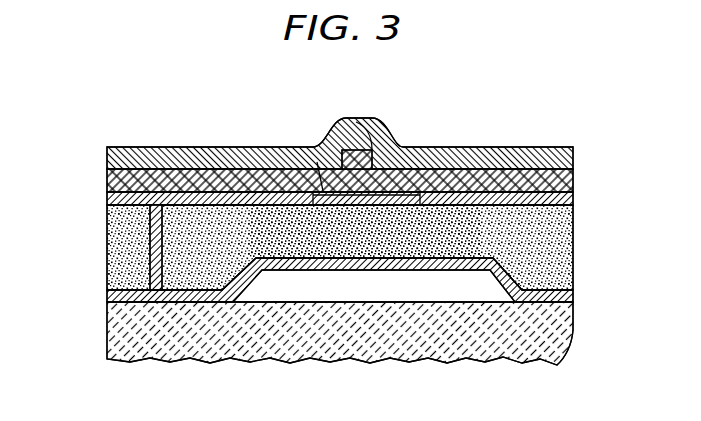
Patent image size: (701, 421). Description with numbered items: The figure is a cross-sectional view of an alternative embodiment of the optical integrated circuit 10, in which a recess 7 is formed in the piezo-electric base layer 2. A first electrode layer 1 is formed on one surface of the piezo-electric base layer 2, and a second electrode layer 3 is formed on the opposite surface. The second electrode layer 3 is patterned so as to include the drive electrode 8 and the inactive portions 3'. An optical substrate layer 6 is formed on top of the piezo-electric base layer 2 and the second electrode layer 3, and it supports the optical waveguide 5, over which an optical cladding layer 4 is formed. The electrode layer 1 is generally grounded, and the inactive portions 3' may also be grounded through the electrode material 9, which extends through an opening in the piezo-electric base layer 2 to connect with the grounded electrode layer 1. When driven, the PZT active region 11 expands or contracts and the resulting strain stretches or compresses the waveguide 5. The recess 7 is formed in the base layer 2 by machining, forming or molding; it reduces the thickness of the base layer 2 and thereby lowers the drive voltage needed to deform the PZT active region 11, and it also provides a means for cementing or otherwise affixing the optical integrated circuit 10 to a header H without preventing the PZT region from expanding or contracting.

The first electrode layer 1 is at (573, 295).
The piezo-electric base layer 2 is at (573, 245).
The second electrode layer 3 is at (311, 164).
The inactive portions 3' is at (332, 189).
The optical cladding layer 4 is at (480, 148).
The optical waveguide 5 is at (368, 125).
The optical substrate layer 6 is at (573, 170).
The recess 7 is at (383, 290).
The drive electrode 8 is at (317, 162).
The electrode material 9 is at (150, 258).
The optical integrated circuit 10 is at (133, 86).
The PZT active region 11 is at (375, 240).
The header H is at (340, 333).